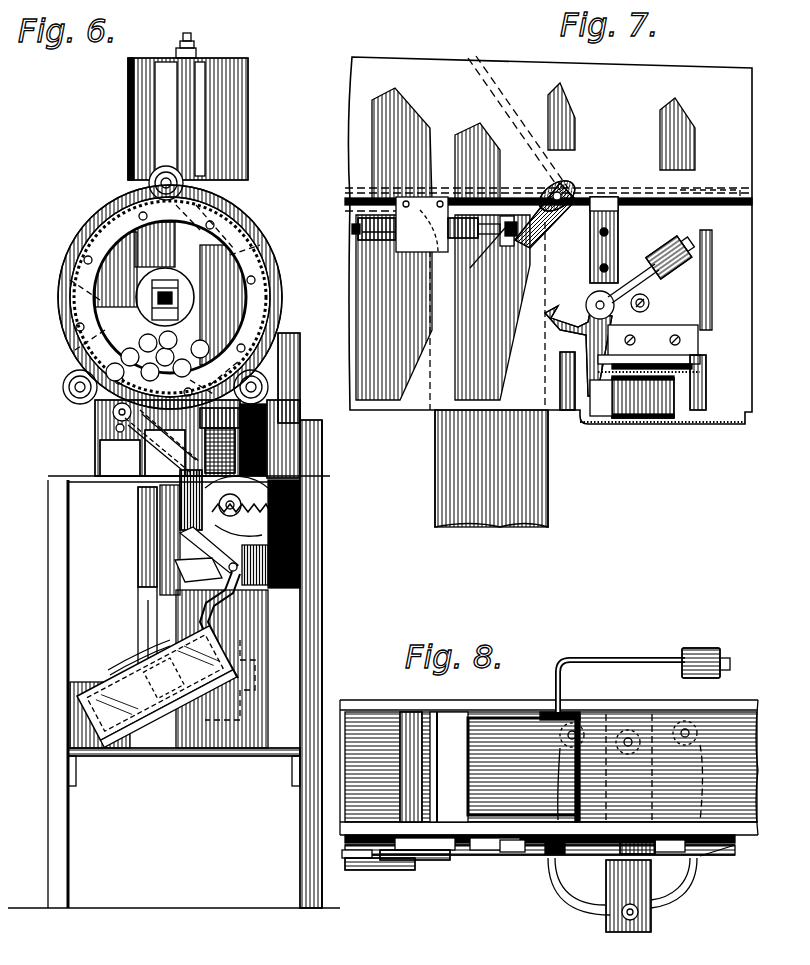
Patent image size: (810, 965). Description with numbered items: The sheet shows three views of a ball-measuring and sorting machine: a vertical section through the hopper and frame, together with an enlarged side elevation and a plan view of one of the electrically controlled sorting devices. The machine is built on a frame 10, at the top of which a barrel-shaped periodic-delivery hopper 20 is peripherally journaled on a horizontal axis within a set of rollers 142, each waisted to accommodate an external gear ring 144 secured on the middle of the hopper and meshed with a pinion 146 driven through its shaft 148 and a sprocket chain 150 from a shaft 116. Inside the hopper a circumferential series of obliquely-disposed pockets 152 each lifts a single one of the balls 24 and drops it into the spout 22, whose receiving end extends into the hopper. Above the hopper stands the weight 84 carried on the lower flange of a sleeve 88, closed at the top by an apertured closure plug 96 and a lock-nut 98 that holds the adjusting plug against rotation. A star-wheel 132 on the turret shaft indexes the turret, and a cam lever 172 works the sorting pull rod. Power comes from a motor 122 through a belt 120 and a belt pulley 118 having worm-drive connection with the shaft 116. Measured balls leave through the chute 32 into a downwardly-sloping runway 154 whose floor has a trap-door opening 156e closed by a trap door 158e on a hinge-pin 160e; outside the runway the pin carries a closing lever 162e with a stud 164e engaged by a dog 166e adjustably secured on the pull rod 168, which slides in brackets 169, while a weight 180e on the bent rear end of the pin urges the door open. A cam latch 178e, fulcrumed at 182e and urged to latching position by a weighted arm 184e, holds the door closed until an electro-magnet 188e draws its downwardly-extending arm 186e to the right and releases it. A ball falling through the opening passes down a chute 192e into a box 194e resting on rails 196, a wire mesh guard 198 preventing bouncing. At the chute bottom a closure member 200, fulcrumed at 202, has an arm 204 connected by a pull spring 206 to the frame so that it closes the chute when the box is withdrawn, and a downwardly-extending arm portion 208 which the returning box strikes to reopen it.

In FIG. 6, the frame 10 is at (50, 480).
In FIG. 6, the periodic-delivery hopper 20 is at (232, 280).
In FIG. 6, the spout 22 is at (172, 280).
In FIG. 6, the balls 24 is at (280, 306).
In FIG. 6, the chute 32 is at (266, 412).
In FIG. 6, the weight 84 is at (249, 100).
In FIG. 6, the sleeve 88 is at (178, 55).
In FIG. 6, the closure plug 96 is at (195, 52).
In FIG. 6, the lock-nut 98 is at (191, 44).
In FIG. 6, the shaft 116 is at (242, 504).
In FIG. 6, the belt pulley 118 is at (145, 565).
In FIG. 6, the belt 120 is at (148, 618).
In FIG. 6, the motor 122 is at (255, 673).
In FIG. 6, the star-wheel 132 is at (128, 476).
In FIG. 6, the rollers 142 is at (150, 180).
In FIG. 6, the external gear ring 144 is at (78, 238).
In FIG. 6, the pinion 146 is at (113, 414).
In FIG. 6, the shaft 148 is at (118, 430).
In FIG. 6, the sprocket chain 150 is at (188, 500).
In FIG. 6, the pockets 152 is at (226, 208).
In FIG. 7, the runway 154 is at (550, 240).
In FIG. 8, the runway 154 is at (362, 722).
In FIG. 7, the trap-door opening 156e is at (350, 172).
In FIG. 8, the trap-door opening 156e is at (455, 712).
In FIG. 7, the trap door 158e is at (478, 80).
In FIG. 8, the trap door 158e is at (508, 730).
In FIG. 7, the hinge-pin 160e is at (563, 185).
In FIG. 8, the hinge-pin 160e is at (548, 680).
In FIG. 7, the closing lever 162e is at (520, 234).
In FIG. 8, the closing lever 162e is at (538, 856).
In FIG. 7, the stud 164e is at (512, 248).
In FIG. 8, the stud 164e is at (515, 856).
In FIG. 7, the dog 166e is at (503, 248).
In FIG. 7, the pull rod 168 is at (492, 197).
In FIG. 8, the pull rod 168 is at (735, 858).
In FIG. 7, the brackets 169 is at (606, 200).
In FIG. 8, the brackets 169 is at (600, 865).
In FIG. 6, the cam lever 172 is at (236, 433).
In FIG. 7, the cam latch 178e is at (560, 326).
In FIG. 8, the cam latch 178e is at (490, 858).
In FIG. 7, the weight 180e is at (716, 192).
In FIG. 8, the weight 180e is at (702, 650).
In FIG. 7, the fulcrum 182e is at (650, 310).
In FIG. 7, the weighted arm 184e is at (640, 280).
In FIG. 8, the weighted arm 184e is at (690, 850).
In FIG. 7, the downwardly-extending arm 186e is at (584, 395).
In FIG. 7, the electro-magnet 188e is at (640, 420).
In FIG. 6, the chute 192e is at (190, 525).
In FIG. 7, the chute 192e is at (530, 508).
In FIG. 6, the box 194e is at (155, 683).
In FIG. 6, the brackets or rails 196 is at (118, 750).
In FIG. 6, the wire mesh guard 198 is at (112, 668).
In FIG. 6, the closure member 200 is at (200, 597).
In FIG. 6, the fulcrum 202 is at (292, 573).
In FIG. 6, the arm 204 is at (292, 545).
In FIG. 6, the pull spring 206 is at (292, 529).
In FIG. 6, the arm portion 208 is at (215, 640).